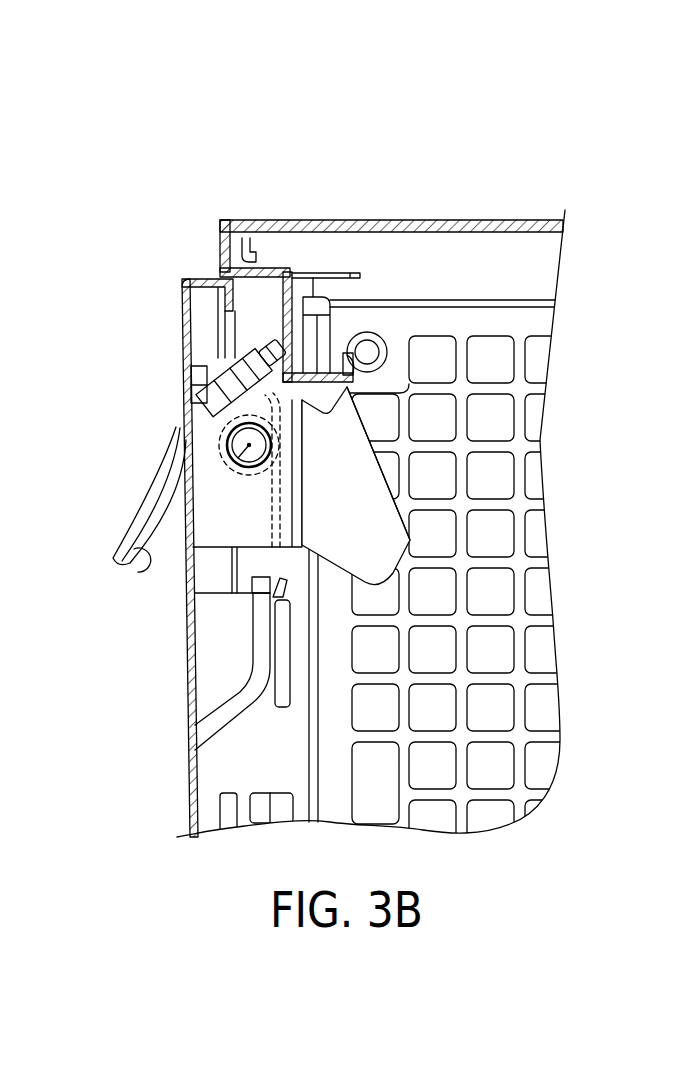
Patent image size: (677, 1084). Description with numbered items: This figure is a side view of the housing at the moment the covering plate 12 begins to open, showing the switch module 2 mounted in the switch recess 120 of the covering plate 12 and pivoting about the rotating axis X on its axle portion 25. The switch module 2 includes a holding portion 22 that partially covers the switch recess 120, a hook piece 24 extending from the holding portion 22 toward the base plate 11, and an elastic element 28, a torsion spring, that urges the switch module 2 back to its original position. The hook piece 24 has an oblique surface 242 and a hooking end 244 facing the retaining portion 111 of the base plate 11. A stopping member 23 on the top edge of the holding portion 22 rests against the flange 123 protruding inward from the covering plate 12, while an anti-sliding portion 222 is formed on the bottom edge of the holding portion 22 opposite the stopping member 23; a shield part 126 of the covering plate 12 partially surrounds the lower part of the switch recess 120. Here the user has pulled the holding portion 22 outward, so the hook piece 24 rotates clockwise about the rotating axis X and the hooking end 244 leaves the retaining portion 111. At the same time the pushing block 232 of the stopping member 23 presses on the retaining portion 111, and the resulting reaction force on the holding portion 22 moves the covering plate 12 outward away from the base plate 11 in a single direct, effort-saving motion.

The base plate 11 is at (483, 220).
The retaining portion 111 is at (294, 297).
The hooking end 244 is at (345, 380).
The pushing block 232 is at (272, 353).
The stopping member 23 is at (205, 369).
The flange 123 is at (200, 380).
The axle portion 25 is at (226, 437).
The switch module 2 is at (114, 519).
The holding portion 22 is at (137, 530).
The anti-sliding portion 222 is at (143, 567).
The switch recess 120 is at (212, 569).
The shield part 126 is at (222, 668).
The covering plate 12 is at (194, 723).
The oblique surface 242 is at (390, 478).
The hook piece 24 is at (454, 486).
The elastic element 28 is at (272, 503).
The rotating axis X is at (230, 467).